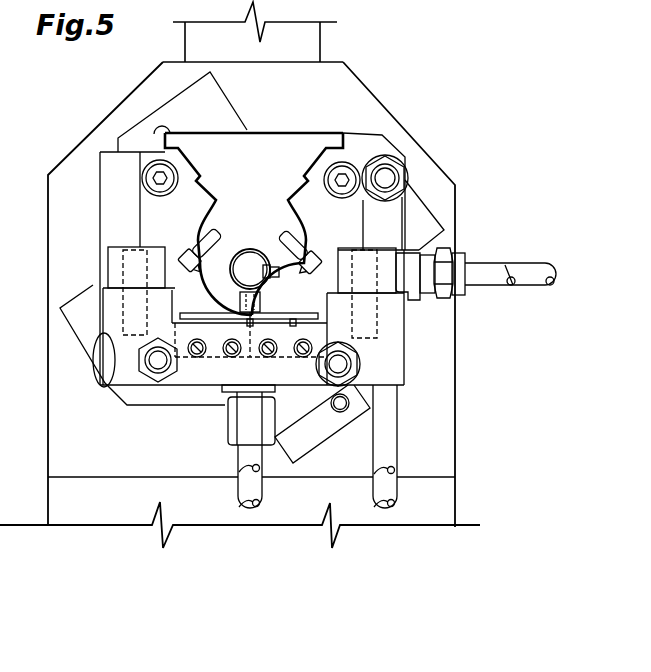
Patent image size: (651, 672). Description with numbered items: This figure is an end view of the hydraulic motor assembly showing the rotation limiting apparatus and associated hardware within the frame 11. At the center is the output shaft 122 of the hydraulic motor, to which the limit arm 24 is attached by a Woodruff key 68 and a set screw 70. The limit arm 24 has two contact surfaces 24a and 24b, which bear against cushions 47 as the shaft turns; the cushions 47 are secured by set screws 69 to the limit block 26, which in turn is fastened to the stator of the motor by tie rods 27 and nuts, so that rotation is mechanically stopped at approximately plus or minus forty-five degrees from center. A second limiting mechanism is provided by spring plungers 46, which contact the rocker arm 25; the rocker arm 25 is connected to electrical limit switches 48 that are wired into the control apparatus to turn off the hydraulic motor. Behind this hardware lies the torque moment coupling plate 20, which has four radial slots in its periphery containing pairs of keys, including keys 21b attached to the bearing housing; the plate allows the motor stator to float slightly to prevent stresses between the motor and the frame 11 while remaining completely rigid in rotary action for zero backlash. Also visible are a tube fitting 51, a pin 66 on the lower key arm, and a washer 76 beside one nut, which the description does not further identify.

The frame 11 is at (394, 115).
The torque moment coupling plate 20 is at (228, 84).
The keys 21b is at (352, 424).
The limit arm 24 is at (254, 211).
The contact surface 24a is at (208, 192).
The contact surface 24b is at (291, 194).
The rocker arm 25 is at (193, 312).
The limit block 26 is at (100, 386).
The tie rods 27 is at (346, 364).
The spring plungers 46 is at (190, 241).
The cushions 47 is at (108, 276).
The limit switches 48 is at (219, 359).
The supply tube fitting 51 is at (505, 263).
The pivot pin 66 is at (331, 403).
The Woodruff key 68 is at (280, 274).
The set screws 69 is at (123, 260).
The set screw 70 is at (262, 300).
The washer 76 is at (360, 368).
The output shaft 122 is at (252, 249).